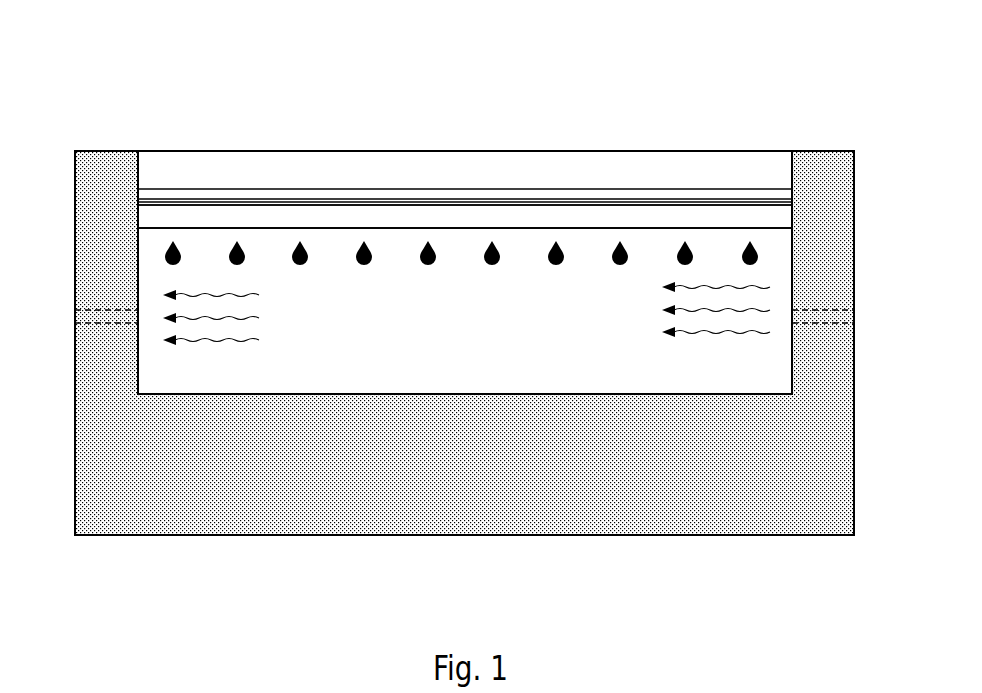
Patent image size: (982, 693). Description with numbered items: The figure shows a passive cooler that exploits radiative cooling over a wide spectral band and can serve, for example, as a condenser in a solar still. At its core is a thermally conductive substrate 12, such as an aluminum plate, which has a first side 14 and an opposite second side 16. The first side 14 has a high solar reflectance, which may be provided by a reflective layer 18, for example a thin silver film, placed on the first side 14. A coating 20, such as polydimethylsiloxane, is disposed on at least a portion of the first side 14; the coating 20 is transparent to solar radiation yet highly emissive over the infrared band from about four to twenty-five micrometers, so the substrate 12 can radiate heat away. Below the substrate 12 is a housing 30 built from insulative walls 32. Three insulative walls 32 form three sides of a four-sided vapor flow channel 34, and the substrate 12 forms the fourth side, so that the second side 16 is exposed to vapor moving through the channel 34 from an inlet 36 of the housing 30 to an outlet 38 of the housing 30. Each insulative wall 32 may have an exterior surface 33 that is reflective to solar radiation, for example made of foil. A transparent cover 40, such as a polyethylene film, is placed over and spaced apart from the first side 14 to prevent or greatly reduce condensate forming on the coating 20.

The thermally conductive substrate 12 is at (442, 213).
The first side 14 is at (267, 198).
The second side 16 is at (149, 240).
The reflective layer 18 is at (533, 202).
The coating 20 is at (623, 193).
The housing 30 is at (283, 535).
The insulative walls 32 is at (464, 343).
The exterior surface 33 is at (675, 545).
The vapor flow channel 34 is at (465, 311).
The inlet 36 is at (817, 323).
The outlet 38 is at (112, 325).
The transparent cover 40 is at (724, 150).